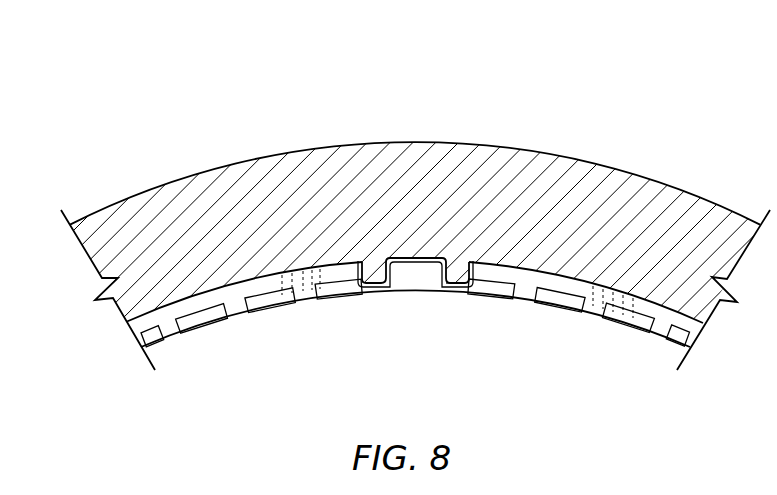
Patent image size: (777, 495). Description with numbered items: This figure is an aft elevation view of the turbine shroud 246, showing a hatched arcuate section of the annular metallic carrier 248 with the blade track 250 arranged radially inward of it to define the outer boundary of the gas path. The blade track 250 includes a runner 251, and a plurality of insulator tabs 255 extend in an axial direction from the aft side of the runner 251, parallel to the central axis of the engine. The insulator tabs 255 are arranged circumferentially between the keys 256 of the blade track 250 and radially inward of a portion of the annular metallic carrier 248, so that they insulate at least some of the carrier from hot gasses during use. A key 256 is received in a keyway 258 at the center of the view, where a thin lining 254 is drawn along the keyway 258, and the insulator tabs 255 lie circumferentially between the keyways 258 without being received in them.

The turbine shroud 246 is at (624, 130).
The annular metallic carrier 248 is at (645, 222).
The blade track 250 is at (652, 356).
The runner 251 is at (120, 327).
The bond coating 254 is at (441, 296).
The insulator tabs 255 is at (203, 340).
The keys 256 is at (403, 278).
The keyways 258 is at (448, 294).